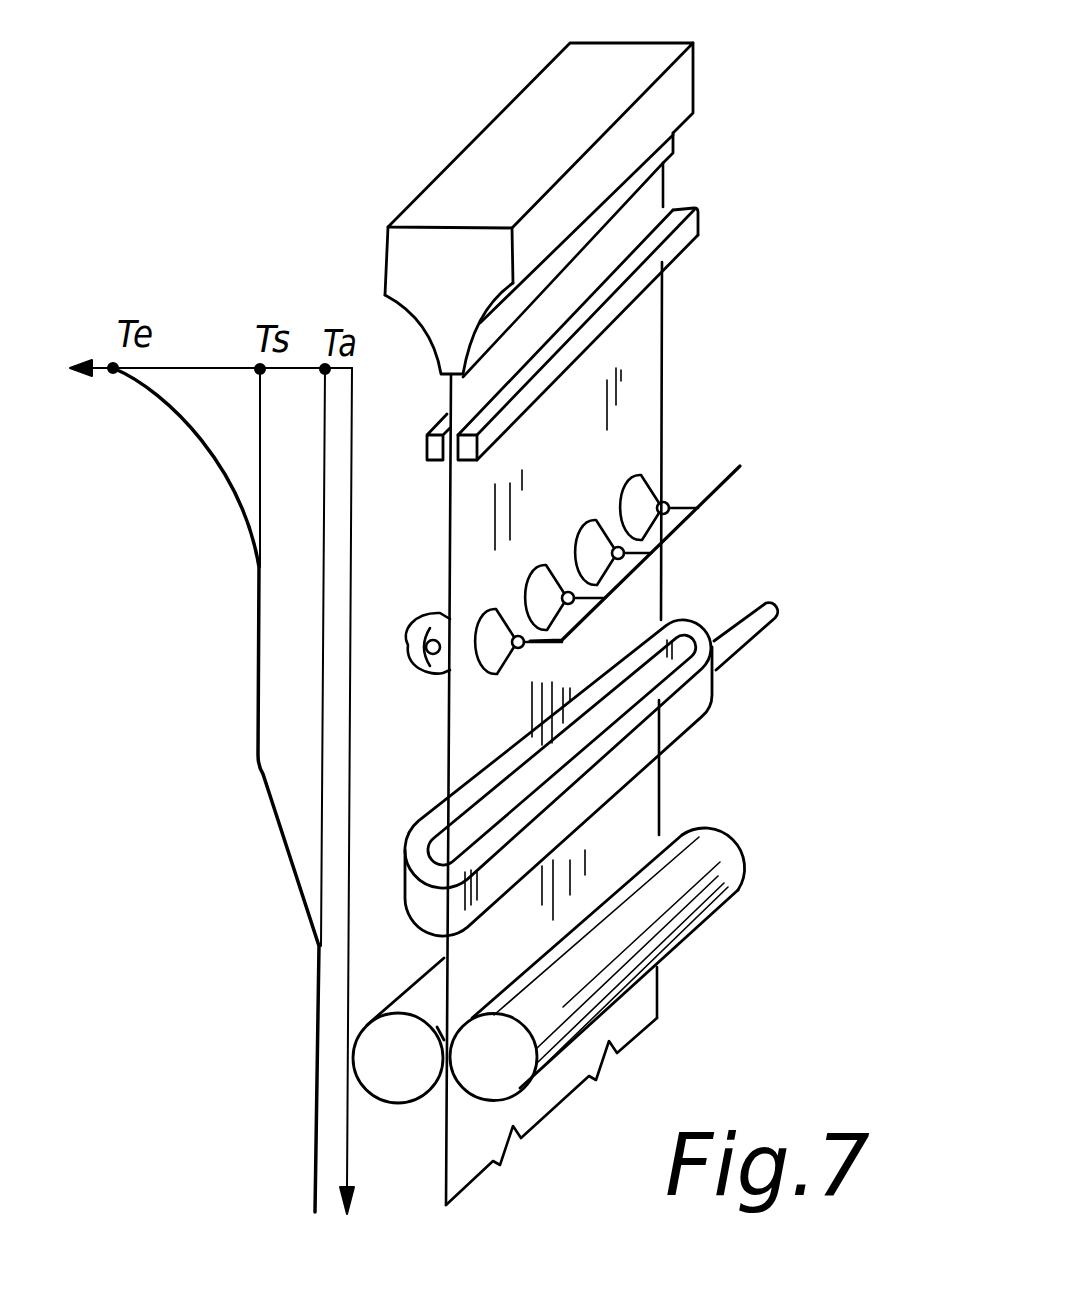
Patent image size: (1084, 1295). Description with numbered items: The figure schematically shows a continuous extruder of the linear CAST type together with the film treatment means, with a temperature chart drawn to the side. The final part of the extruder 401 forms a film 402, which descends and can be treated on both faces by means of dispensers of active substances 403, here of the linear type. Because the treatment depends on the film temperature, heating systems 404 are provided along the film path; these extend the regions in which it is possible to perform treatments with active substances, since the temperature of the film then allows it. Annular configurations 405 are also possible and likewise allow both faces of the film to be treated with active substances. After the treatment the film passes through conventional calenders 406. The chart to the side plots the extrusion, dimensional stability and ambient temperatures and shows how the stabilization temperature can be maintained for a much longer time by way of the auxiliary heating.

The final part of the extruder 401 is at (690, 83).
The film 402 is at (666, 186).
The dispensers of active substances 403 is at (686, 238).
The heating systems 404 is at (642, 497).
The annular configurations 405 is at (697, 693).
The calenders 406 is at (730, 877).